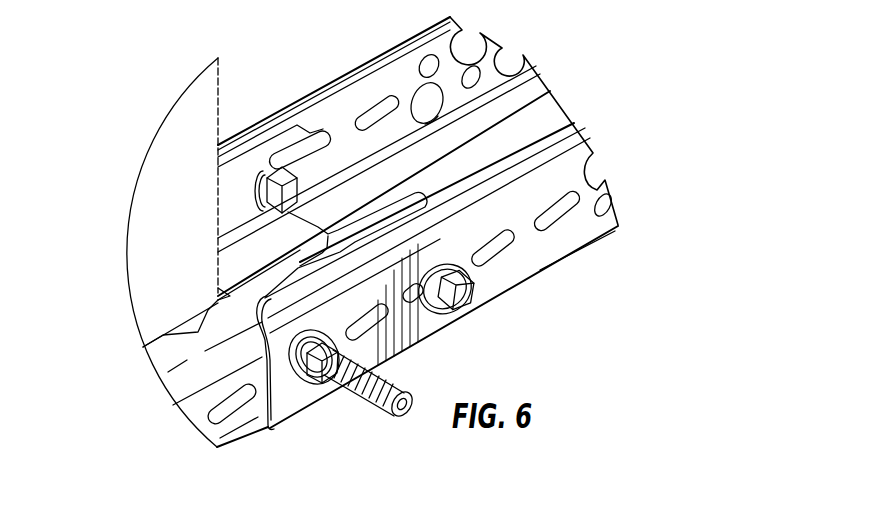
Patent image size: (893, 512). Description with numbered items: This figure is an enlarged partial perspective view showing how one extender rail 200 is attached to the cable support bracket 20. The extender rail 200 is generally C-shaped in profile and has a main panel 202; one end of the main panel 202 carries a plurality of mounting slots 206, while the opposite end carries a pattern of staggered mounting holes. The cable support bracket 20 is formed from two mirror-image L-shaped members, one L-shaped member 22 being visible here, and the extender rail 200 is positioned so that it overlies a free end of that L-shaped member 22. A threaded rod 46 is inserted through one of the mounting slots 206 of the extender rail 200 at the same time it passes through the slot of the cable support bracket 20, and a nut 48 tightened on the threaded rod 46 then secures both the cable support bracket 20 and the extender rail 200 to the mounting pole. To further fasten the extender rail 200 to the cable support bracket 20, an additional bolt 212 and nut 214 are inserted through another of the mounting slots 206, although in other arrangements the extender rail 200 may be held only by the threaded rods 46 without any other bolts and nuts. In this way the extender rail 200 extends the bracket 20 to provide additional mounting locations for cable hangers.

The extender rail 200 is at (648, 137).
The main panel 202 is at (588, 217).
The mounting slot 206 is at (553, 210).
The bolt 212 is at (467, 293).
The nut 214 is at (278, 172).
The cable support bracket 20 is at (172, 446).
The L-shaped member 22 is at (203, 396).
The threaded rod 46 is at (406, 410).
The nut 48 is at (313, 368).